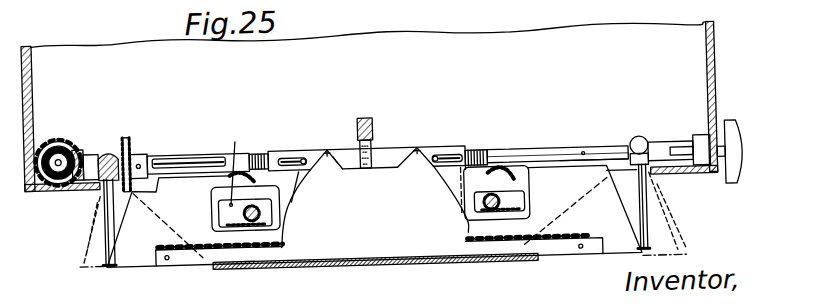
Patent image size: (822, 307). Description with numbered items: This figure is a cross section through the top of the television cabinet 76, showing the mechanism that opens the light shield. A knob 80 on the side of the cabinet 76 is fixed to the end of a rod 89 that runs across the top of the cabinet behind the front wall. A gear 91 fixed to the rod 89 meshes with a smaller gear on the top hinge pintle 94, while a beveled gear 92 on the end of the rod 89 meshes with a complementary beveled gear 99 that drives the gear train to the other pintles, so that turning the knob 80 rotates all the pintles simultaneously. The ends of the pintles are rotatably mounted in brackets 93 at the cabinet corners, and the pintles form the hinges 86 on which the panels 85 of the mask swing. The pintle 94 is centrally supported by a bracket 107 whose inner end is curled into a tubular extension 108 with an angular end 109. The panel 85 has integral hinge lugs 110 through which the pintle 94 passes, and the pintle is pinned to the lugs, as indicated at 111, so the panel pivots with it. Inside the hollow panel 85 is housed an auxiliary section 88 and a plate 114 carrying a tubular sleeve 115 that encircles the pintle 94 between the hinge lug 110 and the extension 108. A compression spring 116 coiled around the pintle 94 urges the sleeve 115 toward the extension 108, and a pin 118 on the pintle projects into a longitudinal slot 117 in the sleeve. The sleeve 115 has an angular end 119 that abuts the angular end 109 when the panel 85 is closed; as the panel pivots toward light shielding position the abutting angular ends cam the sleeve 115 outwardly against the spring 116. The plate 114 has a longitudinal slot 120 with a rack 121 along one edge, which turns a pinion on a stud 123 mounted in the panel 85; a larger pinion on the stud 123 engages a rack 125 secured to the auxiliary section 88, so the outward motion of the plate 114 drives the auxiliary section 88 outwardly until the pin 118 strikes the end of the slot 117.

The cabinet 76 is at (722, 75).
The knob 80 is at (738, 132).
The panel 85 is at (654, 208).
The hinge 86 is at (643, 142).
The auxiliary section 88 is at (110, 259).
The rod 89 is at (173, 152).
The gear 91 is at (128, 143).
The beveled gear 92 is at (77, 144).
The bracket 93 is at (700, 159).
The hinge pintle 94 is at (327, 150).
The beveled gear 99 is at (58, 131).
The bracket 107 is at (373, 124).
The tubular extension 108 is at (372, 168).
The angular end 109 is at (350, 174).
The hinge lug 110 is at (603, 154).
The pin 111 is at (583, 159).
The plate 114 is at (210, 199).
The tubular sleeve 115 is at (283, 155).
The compression spring 116 is at (260, 149).
The longitudinal slot 117 is at (304, 176).
The pin 118 is at (300, 158).
The angular end 119 is at (312, 168).
The longitudinal slot 120 is at (224, 163).
The rack 121 is at (220, 212).
The stud 123 is at (248, 219).
The rack 125 is at (175, 257).